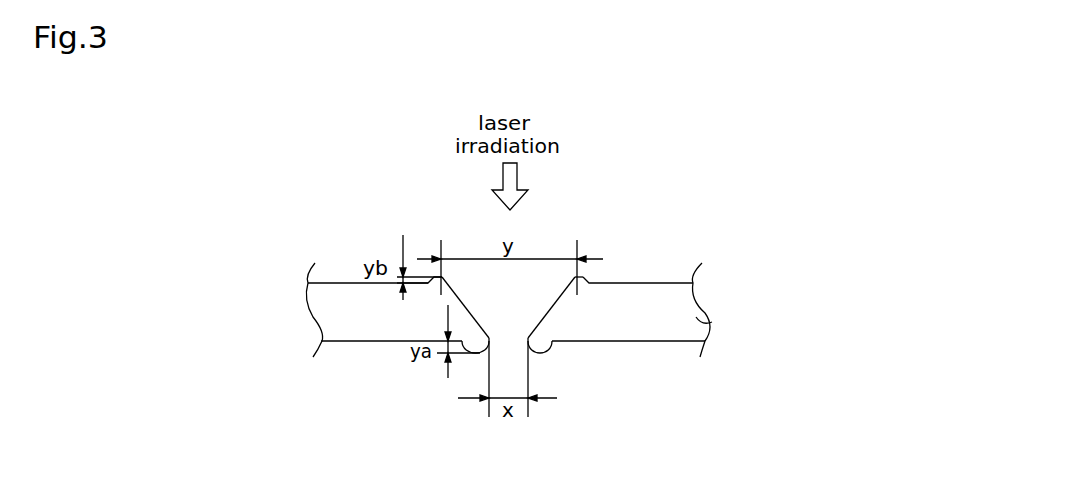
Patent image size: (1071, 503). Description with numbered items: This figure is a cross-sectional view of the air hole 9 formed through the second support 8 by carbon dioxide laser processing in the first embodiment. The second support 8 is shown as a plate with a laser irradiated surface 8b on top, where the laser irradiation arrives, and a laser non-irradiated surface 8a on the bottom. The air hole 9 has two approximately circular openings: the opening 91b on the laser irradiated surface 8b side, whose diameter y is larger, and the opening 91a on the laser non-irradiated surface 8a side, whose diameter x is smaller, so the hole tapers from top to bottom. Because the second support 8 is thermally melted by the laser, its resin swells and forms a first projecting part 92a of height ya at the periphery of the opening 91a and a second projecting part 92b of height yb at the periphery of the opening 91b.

The second support 8 is at (712, 323).
The laser non-irradiated surface 8a is at (342, 342).
The laser irradiated surface 8b is at (332, 283).
The air hole 9 is at (610, 287).
The opening 91a is at (505, 340).
The opening 91b is at (517, 287).
The first projecting part 92a is at (472, 358).
The second projecting part 92b is at (585, 280).